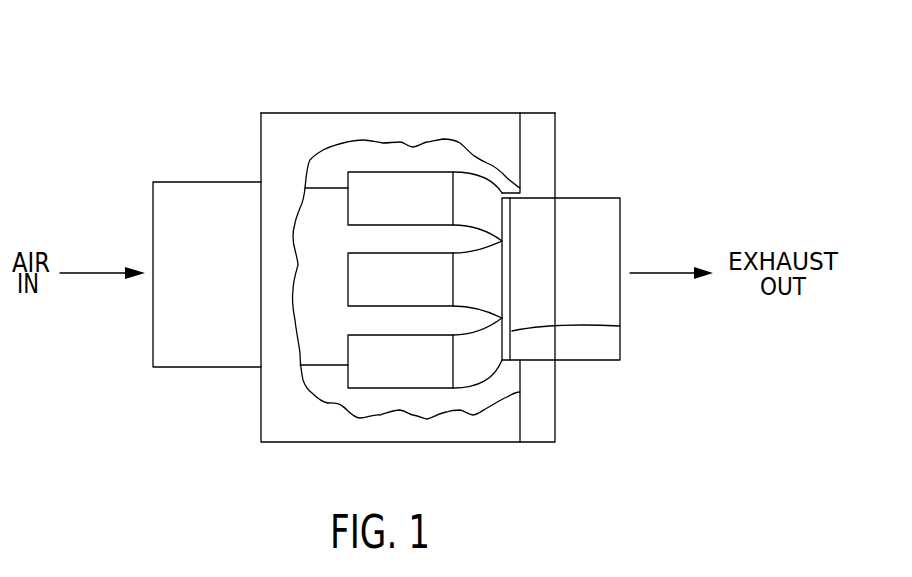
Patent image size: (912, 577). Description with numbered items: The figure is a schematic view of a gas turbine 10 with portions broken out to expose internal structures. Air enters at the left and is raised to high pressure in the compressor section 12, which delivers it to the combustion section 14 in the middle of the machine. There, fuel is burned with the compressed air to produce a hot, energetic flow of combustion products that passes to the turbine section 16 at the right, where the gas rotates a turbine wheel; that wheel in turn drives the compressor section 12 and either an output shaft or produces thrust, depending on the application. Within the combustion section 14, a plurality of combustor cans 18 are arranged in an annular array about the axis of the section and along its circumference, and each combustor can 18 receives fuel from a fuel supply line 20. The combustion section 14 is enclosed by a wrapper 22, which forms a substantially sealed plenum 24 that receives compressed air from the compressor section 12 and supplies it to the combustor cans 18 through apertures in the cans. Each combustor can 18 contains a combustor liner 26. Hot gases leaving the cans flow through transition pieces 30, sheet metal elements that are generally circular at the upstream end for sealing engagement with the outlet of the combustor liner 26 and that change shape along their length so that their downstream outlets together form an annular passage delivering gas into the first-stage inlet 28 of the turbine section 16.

The gas turbine 10 is at (283, 106).
The compressor section 12 is at (175, 182).
The combustion section 14 is at (305, 443).
The turbine section 16 is at (595, 198).
The combustor cans 18 is at (413, 389).
The fuel supply line 20 is at (328, 366).
The wrapper 22 is at (334, 113).
The plenum 24 is at (488, 391).
The combustor liner 26 is at (403, 193).
The first-stage inlet 28 is at (620, 326).
The transition pieces 30 is at (465, 190).